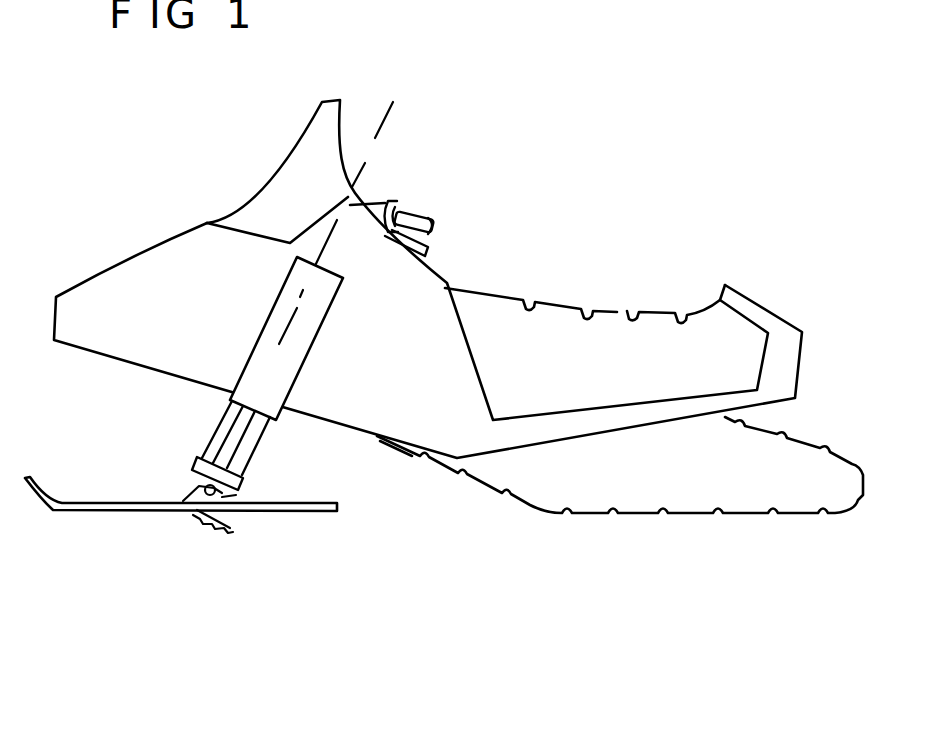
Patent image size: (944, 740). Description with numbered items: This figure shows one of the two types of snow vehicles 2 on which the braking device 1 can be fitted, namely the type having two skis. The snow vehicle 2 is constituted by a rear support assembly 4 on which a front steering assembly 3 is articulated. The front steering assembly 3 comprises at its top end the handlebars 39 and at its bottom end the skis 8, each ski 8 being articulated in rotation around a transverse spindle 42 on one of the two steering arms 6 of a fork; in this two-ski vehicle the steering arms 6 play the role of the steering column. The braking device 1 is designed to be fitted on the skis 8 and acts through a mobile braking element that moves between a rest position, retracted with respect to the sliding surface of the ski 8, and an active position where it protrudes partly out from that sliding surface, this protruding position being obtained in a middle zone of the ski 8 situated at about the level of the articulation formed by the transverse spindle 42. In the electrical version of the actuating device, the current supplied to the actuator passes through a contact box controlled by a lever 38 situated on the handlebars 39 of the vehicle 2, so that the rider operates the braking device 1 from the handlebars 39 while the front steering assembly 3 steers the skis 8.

The braking device 1 is at (188, 563).
The snow vehicle 2 is at (567, 143).
The front steering assembly 3 is at (253, 320).
The rear support assembly 4 is at (690, 283).
The steering arms 6 is at (262, 452).
The ski 8 is at (88, 514).
The lever 38 is at (430, 250).
The handlebars 39 is at (415, 207).
The transverse spindle 42 is at (192, 475).